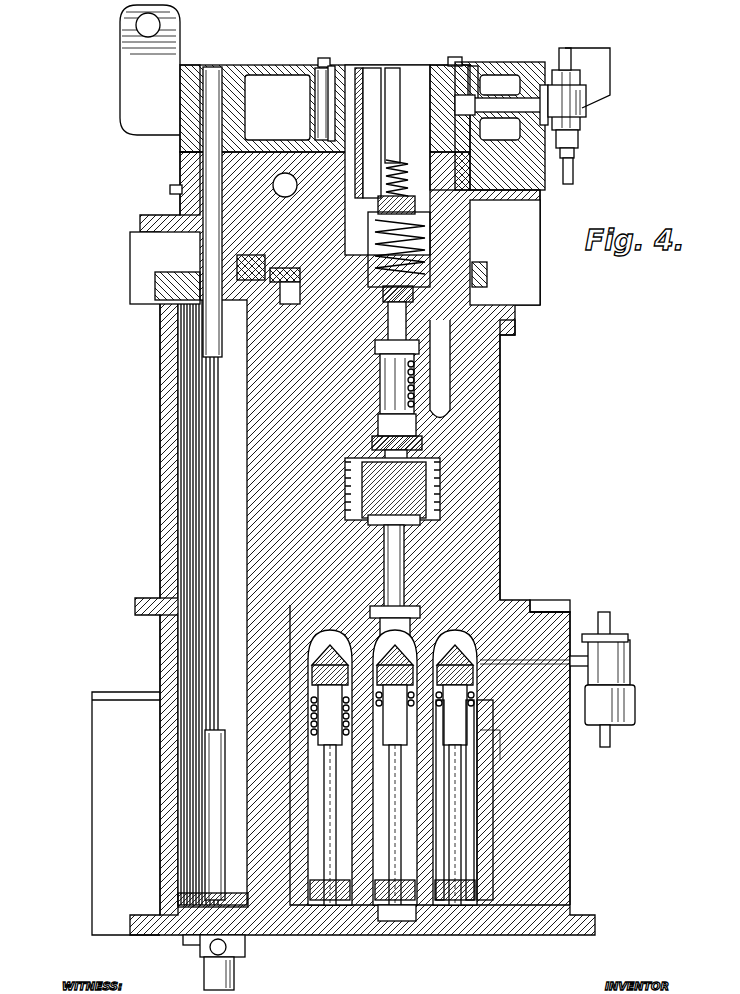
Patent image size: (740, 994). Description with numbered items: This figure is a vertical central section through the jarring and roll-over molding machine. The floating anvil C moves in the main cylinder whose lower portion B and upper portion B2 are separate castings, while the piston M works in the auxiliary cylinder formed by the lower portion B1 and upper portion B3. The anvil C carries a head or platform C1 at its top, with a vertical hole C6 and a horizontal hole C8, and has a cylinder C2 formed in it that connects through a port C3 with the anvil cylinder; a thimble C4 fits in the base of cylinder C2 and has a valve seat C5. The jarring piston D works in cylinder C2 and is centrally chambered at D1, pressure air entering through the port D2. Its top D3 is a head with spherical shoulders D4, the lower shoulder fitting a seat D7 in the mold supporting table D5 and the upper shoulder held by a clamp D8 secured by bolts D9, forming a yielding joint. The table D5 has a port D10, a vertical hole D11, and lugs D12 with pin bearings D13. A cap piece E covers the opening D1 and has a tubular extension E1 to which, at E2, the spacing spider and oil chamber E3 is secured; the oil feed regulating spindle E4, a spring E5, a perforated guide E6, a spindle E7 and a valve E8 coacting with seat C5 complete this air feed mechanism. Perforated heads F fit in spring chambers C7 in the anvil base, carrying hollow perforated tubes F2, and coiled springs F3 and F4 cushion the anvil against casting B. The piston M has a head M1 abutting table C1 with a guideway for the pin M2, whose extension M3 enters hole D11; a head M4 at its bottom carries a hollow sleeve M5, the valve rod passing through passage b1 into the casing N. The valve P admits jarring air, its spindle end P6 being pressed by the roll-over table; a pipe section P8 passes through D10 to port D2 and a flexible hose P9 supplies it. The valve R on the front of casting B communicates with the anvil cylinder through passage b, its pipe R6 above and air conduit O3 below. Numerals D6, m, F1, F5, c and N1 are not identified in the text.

The pin bearing D13 is at (136, 25).
The lug D12 is at (150, 70).
The vertical hole D11 is at (200, 105).
The mold supporting table D5 is at (268, 66).
The bolt D9 is at (452, 55).
The clamp D8 is at (472, 70).
The spherical shoulder D4 is at (329, 133).
The piston head D3 is at (368, 88).
The cap piece E is at (430, 60).
The port D2 is at (487, 100).
The pipe section P8 is at (510, 110).
The port D10 is at (540, 105).
The spindle upper end P6 is at (565, 38).
The valve P is at (582, 112).
The flexible hose P9 is at (573, 170).
The head C1 is at (535, 200).
The window D6 is at (312, 112).
The vertical hole C6 is at (203, 175).
The screw m is at (170, 190).
The horizontal hole C8 is at (285, 185).
The tubular extension E1 is at (400, 92).
The seat D7 is at (440, 150).
The securing point E2 is at (426, 152).
The central chamber D1 is at (425, 170).
The pin M2 is at (215, 272).
The piston head M1 is at (250, 258).
The spring E5 is at (345, 243).
The perforated guide E6 is at (345, 266).
The spacing spider and oil chamber E3 is at (440, 213).
The oil feed regulating spindle E4 is at (487, 268).
The spindle E7 is at (440, 318).
The valve E8 is at (429, 369).
The cylinder C2 is at (405, 432).
The jarring piston D is at (400, 458).
The upper cylinder portion B2 is at (500, 455).
The valve seat C5 is at (440, 478).
The thimble C4 is at (420, 520).
The floating anvil C is at (472, 556).
The port C3 is at (398, 622).
The perforated head F is at (556, 603).
The flange F1 is at (562, 612).
The passage b is at (575, 658).
The pipe R6 is at (610, 622).
The valve R is at (618, 662).
The coiled spring F3 is at (600, 696).
The air conduit O3 is at (610, 742).
The coiled spring F4 is at (588, 890).
The hollow perforated tube F2 is at (380, 966).
The main cylinder lower portion B is at (520, 816).
The spring chamber C7 is at (478, 862).
The sleeve F5 is at (485, 915).
The valve stem c is at (382, 795).
The auxiliary cylinder upper portion B3 is at (160, 460).
The piston M is at (175, 500).
The auxiliary cylinder lower portion B1 is at (160, 660).
The hollow sleeve M5 is at (230, 735).
The head M4 is at (178, 915).
The upward extension M3 is at (211, 212).
The passage b1 is at (185, 940).
The hole N1 is at (226, 947).
The casing N is at (234, 975).